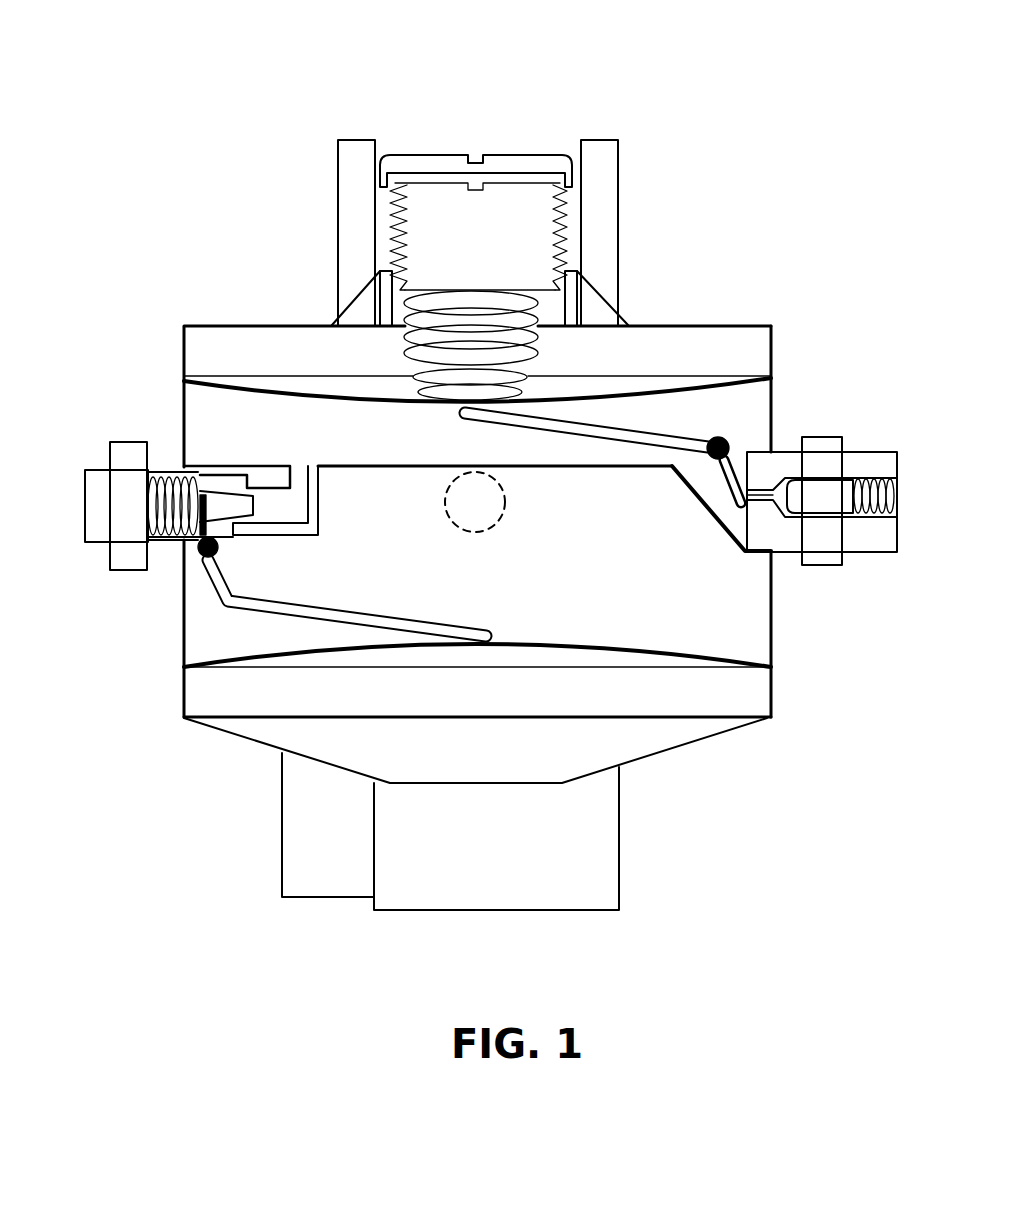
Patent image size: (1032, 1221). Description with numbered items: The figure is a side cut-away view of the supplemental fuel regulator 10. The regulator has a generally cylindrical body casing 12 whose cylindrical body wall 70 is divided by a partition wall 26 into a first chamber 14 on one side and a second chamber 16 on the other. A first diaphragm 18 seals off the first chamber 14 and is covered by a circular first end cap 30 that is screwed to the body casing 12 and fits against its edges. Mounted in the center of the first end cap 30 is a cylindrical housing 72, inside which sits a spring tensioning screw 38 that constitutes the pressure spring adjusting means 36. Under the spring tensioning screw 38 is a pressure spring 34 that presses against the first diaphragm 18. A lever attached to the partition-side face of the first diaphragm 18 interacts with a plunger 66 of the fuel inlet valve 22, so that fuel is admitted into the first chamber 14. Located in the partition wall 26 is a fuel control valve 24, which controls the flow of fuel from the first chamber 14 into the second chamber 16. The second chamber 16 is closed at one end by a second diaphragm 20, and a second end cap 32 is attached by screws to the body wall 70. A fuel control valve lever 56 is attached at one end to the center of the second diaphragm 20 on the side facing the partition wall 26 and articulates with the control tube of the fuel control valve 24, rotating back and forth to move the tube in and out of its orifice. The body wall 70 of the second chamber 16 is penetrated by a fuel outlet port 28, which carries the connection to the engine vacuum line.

The supplemental fuel regulator 10 is at (215, 262).
The body casing 12 is at (740, 455).
The first chamber 14 is at (416, 451).
The second chamber 16 is at (670, 601).
The first diaphragm 18 is at (281, 393).
The second diaphragm 20 is at (703, 655).
The fuel inlet valve 22 is at (868, 418).
The fuel control valve 24 is at (320, 515).
The partition wall 26 is at (695, 492).
The fuel outlet port 28 is at (505, 502).
The first end cap 30 is at (275, 343).
The second end cap 32 is at (750, 697).
The pressure spring 34 is at (547, 352).
The pressure spring adjusting means 36 is at (517, 208).
The spring tensioning screw 38 is at (662, 228).
The fuel control valve lever 56 is at (225, 606).
The plunger 66 is at (150, 492).
The body wall 70 is at (773, 632).
The housing 72 is at (352, 202).